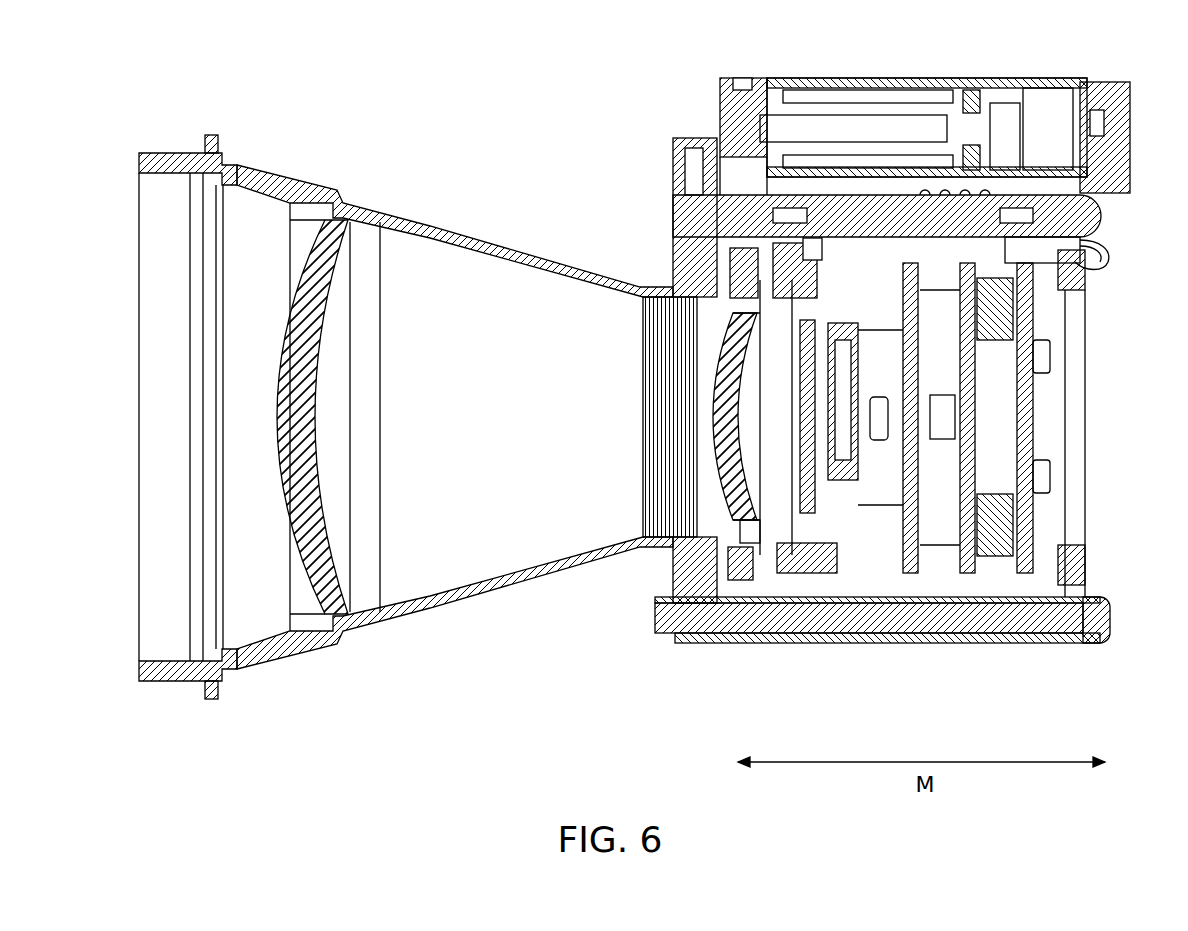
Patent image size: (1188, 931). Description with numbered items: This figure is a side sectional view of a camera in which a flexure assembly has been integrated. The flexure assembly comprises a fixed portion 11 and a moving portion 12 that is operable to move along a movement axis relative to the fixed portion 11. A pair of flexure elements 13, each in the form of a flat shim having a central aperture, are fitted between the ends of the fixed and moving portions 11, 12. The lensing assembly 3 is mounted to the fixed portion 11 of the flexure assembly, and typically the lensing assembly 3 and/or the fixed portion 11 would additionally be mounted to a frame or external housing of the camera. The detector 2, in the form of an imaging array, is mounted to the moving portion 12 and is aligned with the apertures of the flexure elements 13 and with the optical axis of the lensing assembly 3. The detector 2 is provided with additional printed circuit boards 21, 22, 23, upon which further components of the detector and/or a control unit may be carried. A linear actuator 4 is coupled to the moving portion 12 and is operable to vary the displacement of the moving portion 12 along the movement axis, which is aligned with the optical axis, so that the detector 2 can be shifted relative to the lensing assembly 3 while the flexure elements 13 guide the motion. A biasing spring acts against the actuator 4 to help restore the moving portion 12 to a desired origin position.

The detector 2 is at (820, 565).
The lensing assembly 3 is at (455, 588).
The linear actuator 4 is at (867, 95).
The fixed portion 11 is at (730, 640).
The moving portion 12 is at (700, 203).
The flexure element 13 is at (1085, 455).
The printed circuit board 21 is at (917, 565).
The printed circuit board 22 is at (965, 575).
The printed circuit board 23 is at (1025, 575).